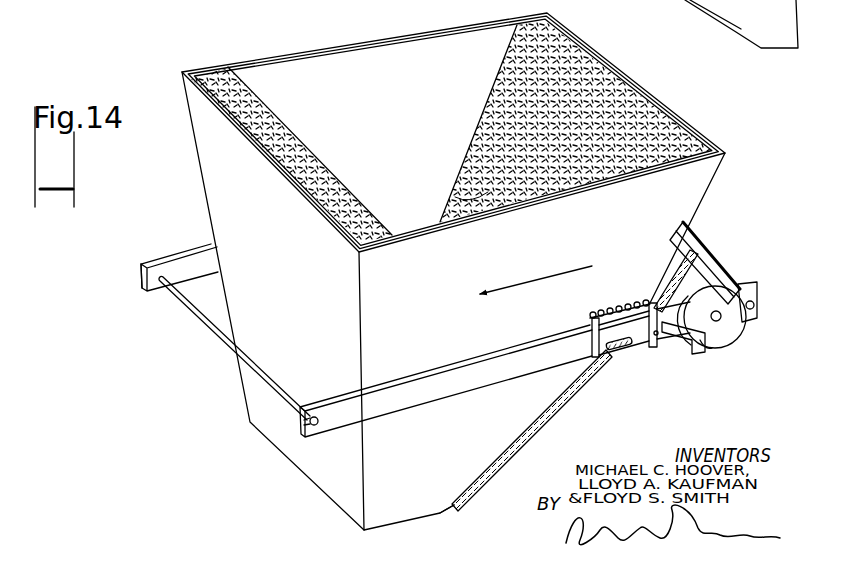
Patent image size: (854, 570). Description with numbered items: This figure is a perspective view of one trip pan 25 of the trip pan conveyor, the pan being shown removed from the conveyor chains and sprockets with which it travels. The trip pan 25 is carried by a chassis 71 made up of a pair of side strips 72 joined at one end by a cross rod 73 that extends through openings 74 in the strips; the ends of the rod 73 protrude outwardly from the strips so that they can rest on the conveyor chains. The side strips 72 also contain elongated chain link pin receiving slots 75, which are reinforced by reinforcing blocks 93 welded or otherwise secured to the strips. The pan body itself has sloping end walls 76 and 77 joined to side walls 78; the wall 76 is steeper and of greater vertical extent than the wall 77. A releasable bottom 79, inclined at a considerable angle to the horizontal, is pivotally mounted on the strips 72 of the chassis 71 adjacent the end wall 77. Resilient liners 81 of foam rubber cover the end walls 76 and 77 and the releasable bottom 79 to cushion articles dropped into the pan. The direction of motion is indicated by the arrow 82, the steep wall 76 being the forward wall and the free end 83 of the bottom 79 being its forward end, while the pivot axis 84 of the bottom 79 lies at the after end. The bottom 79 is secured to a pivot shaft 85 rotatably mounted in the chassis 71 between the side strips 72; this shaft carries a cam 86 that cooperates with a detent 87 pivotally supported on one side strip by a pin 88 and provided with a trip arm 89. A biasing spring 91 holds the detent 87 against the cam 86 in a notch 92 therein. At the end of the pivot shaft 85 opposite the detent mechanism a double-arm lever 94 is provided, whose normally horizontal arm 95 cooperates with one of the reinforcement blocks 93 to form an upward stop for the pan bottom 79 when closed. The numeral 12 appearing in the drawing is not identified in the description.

The hopper assembly 12 is at (337, 425).
The trip pan 25 is at (178, 98).
The chassis 71 is at (156, 302).
The side strips 72 is at (163, 262).
The cross rod 73 is at (200, 323).
The openings 74 is at (143, 285).
The chain link pin receiving slots 75 is at (637, 346).
The end wall 76 is at (206, 195).
The end wall 77 is at (714, 192).
The side walls 78 is at (387, 38).
The releasable bottom 79 is at (541, 438).
The resilient liners 81 is at (304, 163).
The arrow 82 is at (532, 281).
The free end 83 is at (452, 512).
The pivot axis 84 is at (722, 322).
The pivot shaft 85 is at (723, 275).
The cam 86 is at (740, 318).
The detent 87 is at (700, 354).
The pin 88 is at (657, 336).
The trip arm 89 is at (665, 277).
The biasing spring 91 is at (613, 307).
The notch 92 is at (714, 328).
The reinforcing blocks 93 is at (622, 348).
The double-arm lever 94 is at (600, 0).
The horizontal arm 95 is at (683, 0).